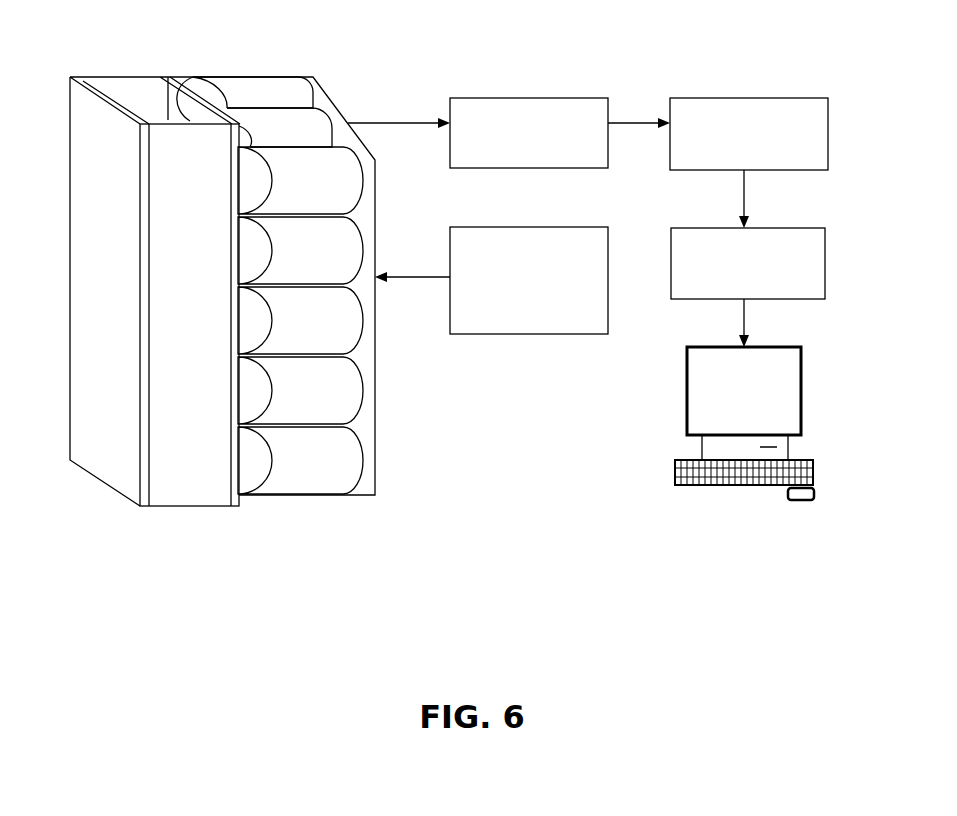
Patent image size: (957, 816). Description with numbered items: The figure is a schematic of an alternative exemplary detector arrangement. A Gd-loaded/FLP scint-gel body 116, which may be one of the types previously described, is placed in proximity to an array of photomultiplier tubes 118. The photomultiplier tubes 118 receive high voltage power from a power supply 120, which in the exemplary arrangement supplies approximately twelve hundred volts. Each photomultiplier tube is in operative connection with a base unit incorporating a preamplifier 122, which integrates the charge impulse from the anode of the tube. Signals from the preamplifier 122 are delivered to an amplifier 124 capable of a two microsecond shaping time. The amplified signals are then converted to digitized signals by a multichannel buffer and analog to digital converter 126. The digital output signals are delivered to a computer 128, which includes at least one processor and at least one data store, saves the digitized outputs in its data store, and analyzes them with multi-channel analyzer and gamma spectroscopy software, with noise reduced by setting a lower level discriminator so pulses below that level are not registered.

The scint-gel body 116 is at (182, 492).
The array of photomultiplier tubes 118 is at (308, 487).
The power supply 120 is at (490, 334).
The preamplifier 122 is at (502, 97).
The amplifier 124 is at (752, 98).
The multichannel buffer and analog to digital converter 126 is at (825, 262).
The computer 128 is at (801, 400).